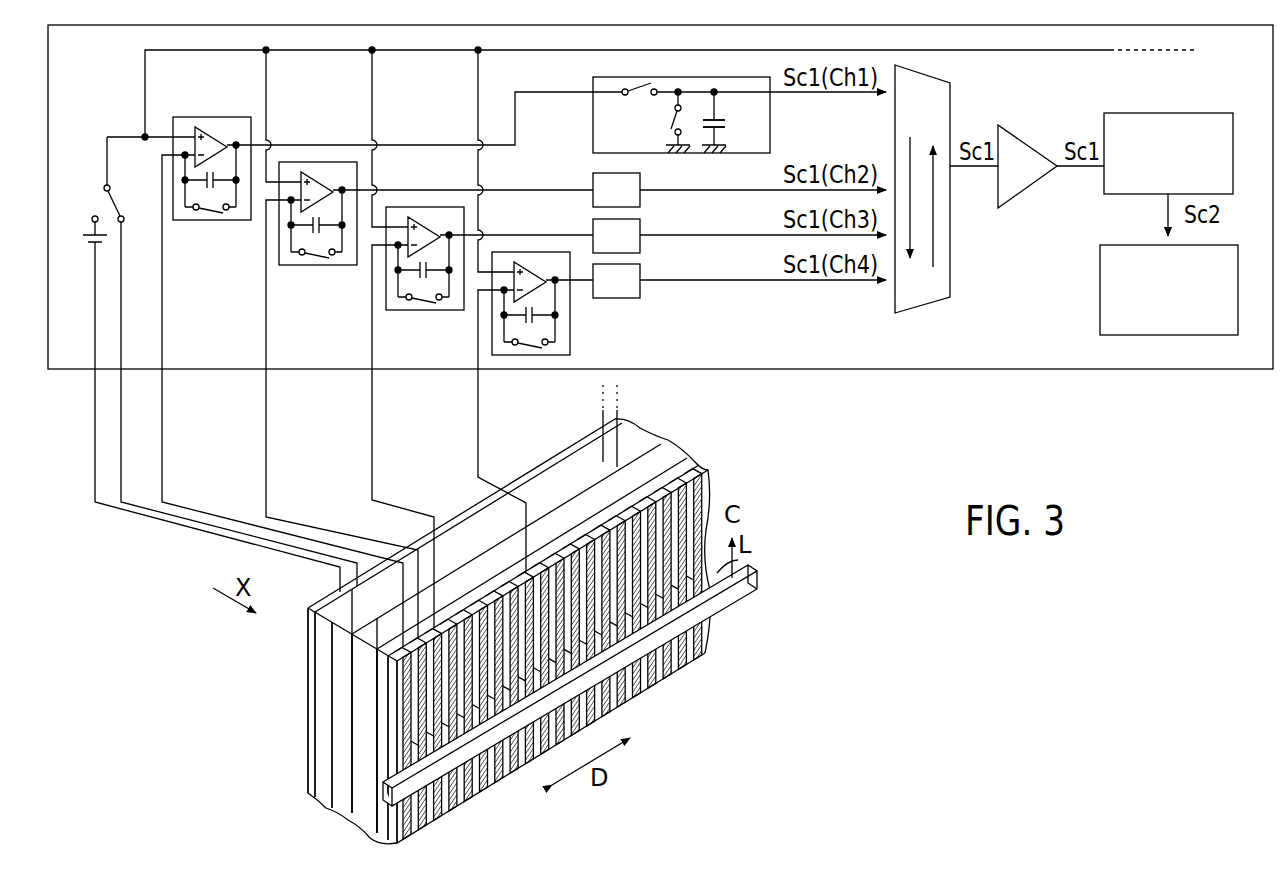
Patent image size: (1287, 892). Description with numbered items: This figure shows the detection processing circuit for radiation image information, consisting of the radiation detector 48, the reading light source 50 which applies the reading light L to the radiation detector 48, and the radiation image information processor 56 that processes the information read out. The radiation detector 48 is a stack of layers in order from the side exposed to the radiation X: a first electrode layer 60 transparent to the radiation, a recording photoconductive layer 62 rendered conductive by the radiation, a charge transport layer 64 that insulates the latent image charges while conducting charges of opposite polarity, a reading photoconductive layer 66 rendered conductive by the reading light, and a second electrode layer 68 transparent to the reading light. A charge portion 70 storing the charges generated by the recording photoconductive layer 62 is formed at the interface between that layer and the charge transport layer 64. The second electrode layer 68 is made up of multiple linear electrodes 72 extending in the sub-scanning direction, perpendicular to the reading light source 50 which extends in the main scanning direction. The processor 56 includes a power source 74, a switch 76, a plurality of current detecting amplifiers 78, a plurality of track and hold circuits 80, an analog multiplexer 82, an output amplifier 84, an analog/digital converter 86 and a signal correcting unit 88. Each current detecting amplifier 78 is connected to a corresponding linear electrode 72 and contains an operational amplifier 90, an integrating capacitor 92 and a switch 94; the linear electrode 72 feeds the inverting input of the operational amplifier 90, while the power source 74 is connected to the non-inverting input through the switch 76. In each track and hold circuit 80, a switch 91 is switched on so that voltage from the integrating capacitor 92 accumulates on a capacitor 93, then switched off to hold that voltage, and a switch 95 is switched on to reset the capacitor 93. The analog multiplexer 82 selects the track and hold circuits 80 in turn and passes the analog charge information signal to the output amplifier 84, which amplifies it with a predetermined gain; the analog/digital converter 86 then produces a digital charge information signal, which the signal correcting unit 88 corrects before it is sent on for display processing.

The radiation detector 48 is at (292, 791).
The reading light source 50 is at (727, 600).
The radiation image information processor 56 is at (1228, 370).
The first electrode layer 60 is at (312, 662).
The recording photoconductive layer 62 is at (333, 670).
The charge transport layer 64 is at (363, 718).
The reading photoconductive layer 66 is at (383, 750).
The second electrode layer 68 is at (390, 810).
The charge portion 70 is at (348, 693).
The linear electrodes 72 is at (681, 683).
The power source 74 is at (83, 236).
The switch 76 is at (103, 205).
The current detecting amplifier 78 is at (240, 220).
The track and hold circuit 80 is at (593, 135).
The analog multiplexer 82 is at (920, 311).
The output amplifier 84 is at (1030, 190).
The analog/digital converter 86 is at (1215, 112).
The signal correcting unit 88 is at (1131, 244).
The operational amplifier 90 is at (217, 130).
The switch 91 is at (640, 98).
The integrating capacitor 92 is at (208, 193).
The capacitor 93 is at (726, 122).
The switch 94 is at (208, 216).
The switch 95 is at (666, 126).